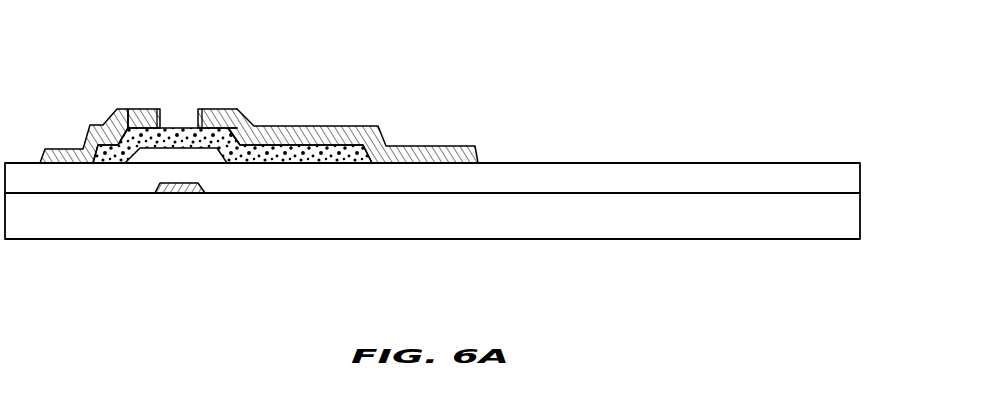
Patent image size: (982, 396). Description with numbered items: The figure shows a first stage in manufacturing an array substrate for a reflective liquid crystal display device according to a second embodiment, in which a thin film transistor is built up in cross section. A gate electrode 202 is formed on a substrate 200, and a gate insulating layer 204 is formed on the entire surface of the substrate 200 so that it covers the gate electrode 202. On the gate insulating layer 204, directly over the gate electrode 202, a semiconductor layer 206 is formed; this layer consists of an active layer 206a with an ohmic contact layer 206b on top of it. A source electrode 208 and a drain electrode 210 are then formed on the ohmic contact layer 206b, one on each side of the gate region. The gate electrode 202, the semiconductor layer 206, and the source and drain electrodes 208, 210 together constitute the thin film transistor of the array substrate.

The substrate 200 is at (698, 215).
The gate electrode 202 is at (175, 195).
The gate insulating layer 204 is at (418, 185).
The semiconductor layer 206 is at (232, 88).
The active layer 206a is at (130, 109).
The ohmic contact layer 206b is at (159, 109).
The source electrode 208 is at (63, 149).
The drain electrode 210 is at (423, 146).